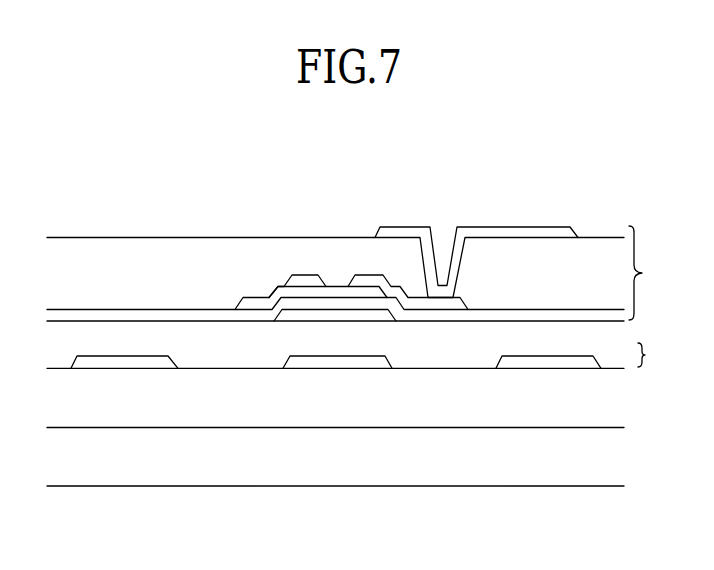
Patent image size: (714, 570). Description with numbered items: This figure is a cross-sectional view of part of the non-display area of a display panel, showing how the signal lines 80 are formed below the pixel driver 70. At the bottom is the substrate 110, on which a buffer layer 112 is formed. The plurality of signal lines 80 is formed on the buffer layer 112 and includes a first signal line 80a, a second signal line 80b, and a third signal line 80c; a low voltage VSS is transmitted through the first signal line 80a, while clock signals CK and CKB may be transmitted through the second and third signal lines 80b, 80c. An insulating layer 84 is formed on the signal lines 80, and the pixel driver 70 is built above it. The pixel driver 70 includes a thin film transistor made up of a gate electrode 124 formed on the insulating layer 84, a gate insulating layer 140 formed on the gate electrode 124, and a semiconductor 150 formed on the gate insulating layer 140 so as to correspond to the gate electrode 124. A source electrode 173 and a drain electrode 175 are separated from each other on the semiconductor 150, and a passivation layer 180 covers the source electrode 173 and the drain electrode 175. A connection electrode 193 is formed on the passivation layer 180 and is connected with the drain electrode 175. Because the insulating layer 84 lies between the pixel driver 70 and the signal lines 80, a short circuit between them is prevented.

The pixel driver 70 is at (649, 273).
The signal lines 80 is at (655, 355).
The first signal line 80a is at (122, 362).
The second signal line 80b is at (333, 362).
The third signal line 80c is at (552, 360).
The insulating layer 84 is at (463, 350).
The substrate 110 is at (397, 463).
The buffer layer 112 is at (243, 398).
The gate electrode 124 is at (335, 316).
The gate insulating layer 140 is at (136, 317).
The semiconductor 150 is at (310, 291).
The source electrode 173 is at (277, 288).
The drain electrode 175 is at (374, 279).
The passivation layer 180 is at (558, 258).
The connection electrode 193 is at (487, 233).